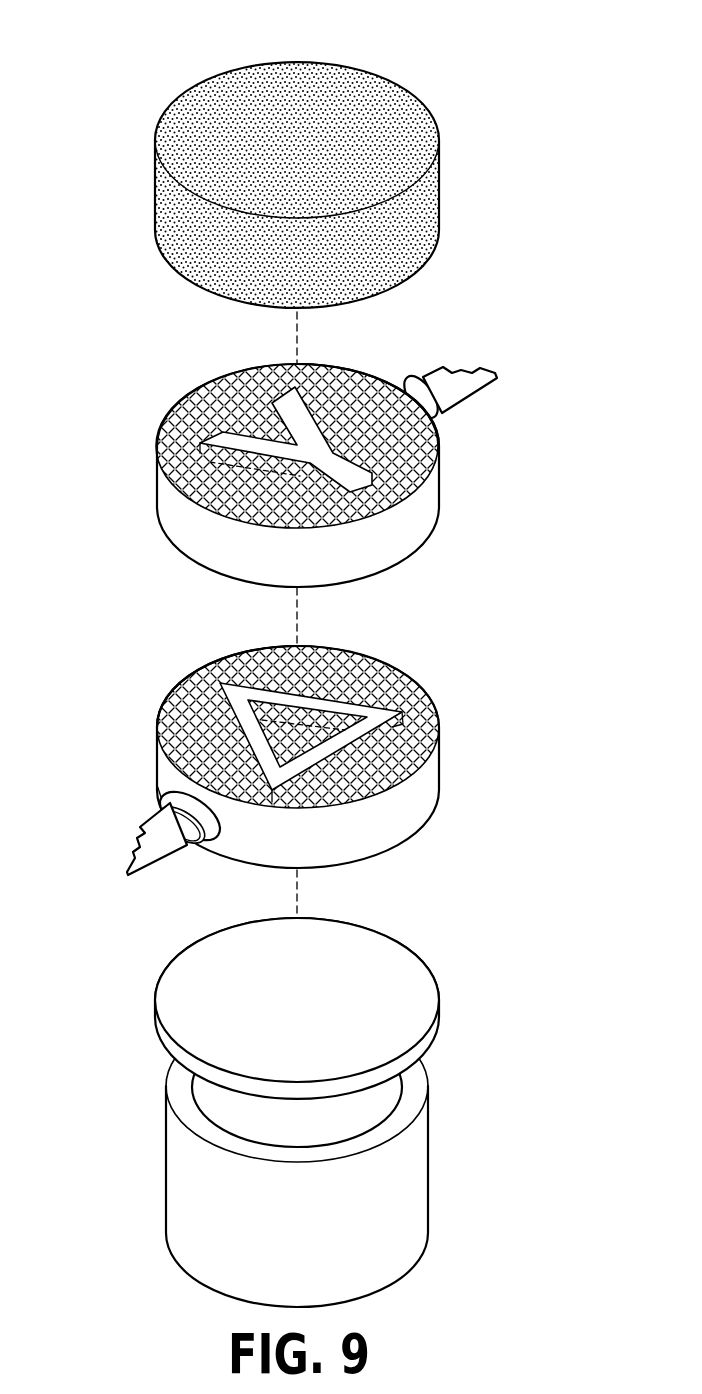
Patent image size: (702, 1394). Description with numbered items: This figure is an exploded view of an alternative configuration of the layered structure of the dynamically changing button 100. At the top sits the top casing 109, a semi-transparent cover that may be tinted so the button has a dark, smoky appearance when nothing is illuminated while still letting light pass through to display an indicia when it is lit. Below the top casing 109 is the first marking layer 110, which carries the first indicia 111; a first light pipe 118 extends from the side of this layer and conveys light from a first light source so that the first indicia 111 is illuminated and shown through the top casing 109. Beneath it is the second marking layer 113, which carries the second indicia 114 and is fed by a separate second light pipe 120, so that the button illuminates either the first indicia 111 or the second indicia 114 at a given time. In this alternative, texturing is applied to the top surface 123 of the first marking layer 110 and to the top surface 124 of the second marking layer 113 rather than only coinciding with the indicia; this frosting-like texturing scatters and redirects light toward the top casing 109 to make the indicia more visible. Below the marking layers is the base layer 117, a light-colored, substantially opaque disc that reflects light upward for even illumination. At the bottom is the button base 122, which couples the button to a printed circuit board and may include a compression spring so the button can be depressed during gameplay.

The dynamically changing button 100 is at (100, 128).
The top casing 109 is at (384, 70).
The first marking layer 110 is at (287, 461).
The first indicia 111 is at (318, 403).
The second marking layer 113 is at (305, 736).
The second indicia 114 is at (338, 677).
The base layer 117 is at (417, 953).
The first light pipe 118 is at (470, 400).
The second light pipe 120 is at (137, 813).
The button base 122 is at (165, 1158).
The top surface of the first marking layer 123 is at (413, 447).
The top surface of the second marking layer 124 is at (173, 718).